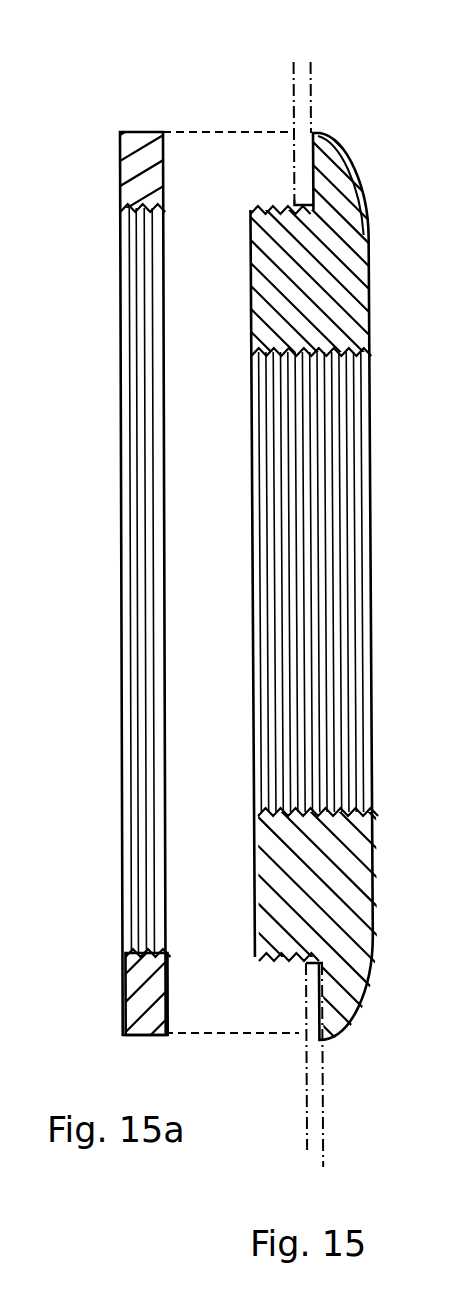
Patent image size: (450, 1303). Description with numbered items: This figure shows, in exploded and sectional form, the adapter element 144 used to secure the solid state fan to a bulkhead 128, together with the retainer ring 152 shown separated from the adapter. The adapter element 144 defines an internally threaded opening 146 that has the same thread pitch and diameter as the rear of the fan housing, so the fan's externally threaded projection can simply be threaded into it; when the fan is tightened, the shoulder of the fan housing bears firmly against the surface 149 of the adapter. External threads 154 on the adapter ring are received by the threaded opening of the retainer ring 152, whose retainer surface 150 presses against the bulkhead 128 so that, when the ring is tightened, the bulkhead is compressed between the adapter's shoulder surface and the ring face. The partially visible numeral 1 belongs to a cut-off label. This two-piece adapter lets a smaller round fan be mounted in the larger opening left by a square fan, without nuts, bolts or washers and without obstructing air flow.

In FIG. 15, the device (partially shown numeral) 1 is at (449, 415).
In FIG. 15, the bulkhead 128 is at (302, 1148).
In FIG. 15, the adapter element 144 is at (345, 1003).
In FIG. 15, the internally threaded opening 146 is at (338, 356).
In FIG. 15, the surface of the adapter 149 is at (372, 872).
In FIG. 15A, the retainer surface 150 is at (160, 946).
In FIG. 15A, the retainer ring 152 is at (135, 1001).
In FIG. 15, the external threads 154 is at (250, 225).